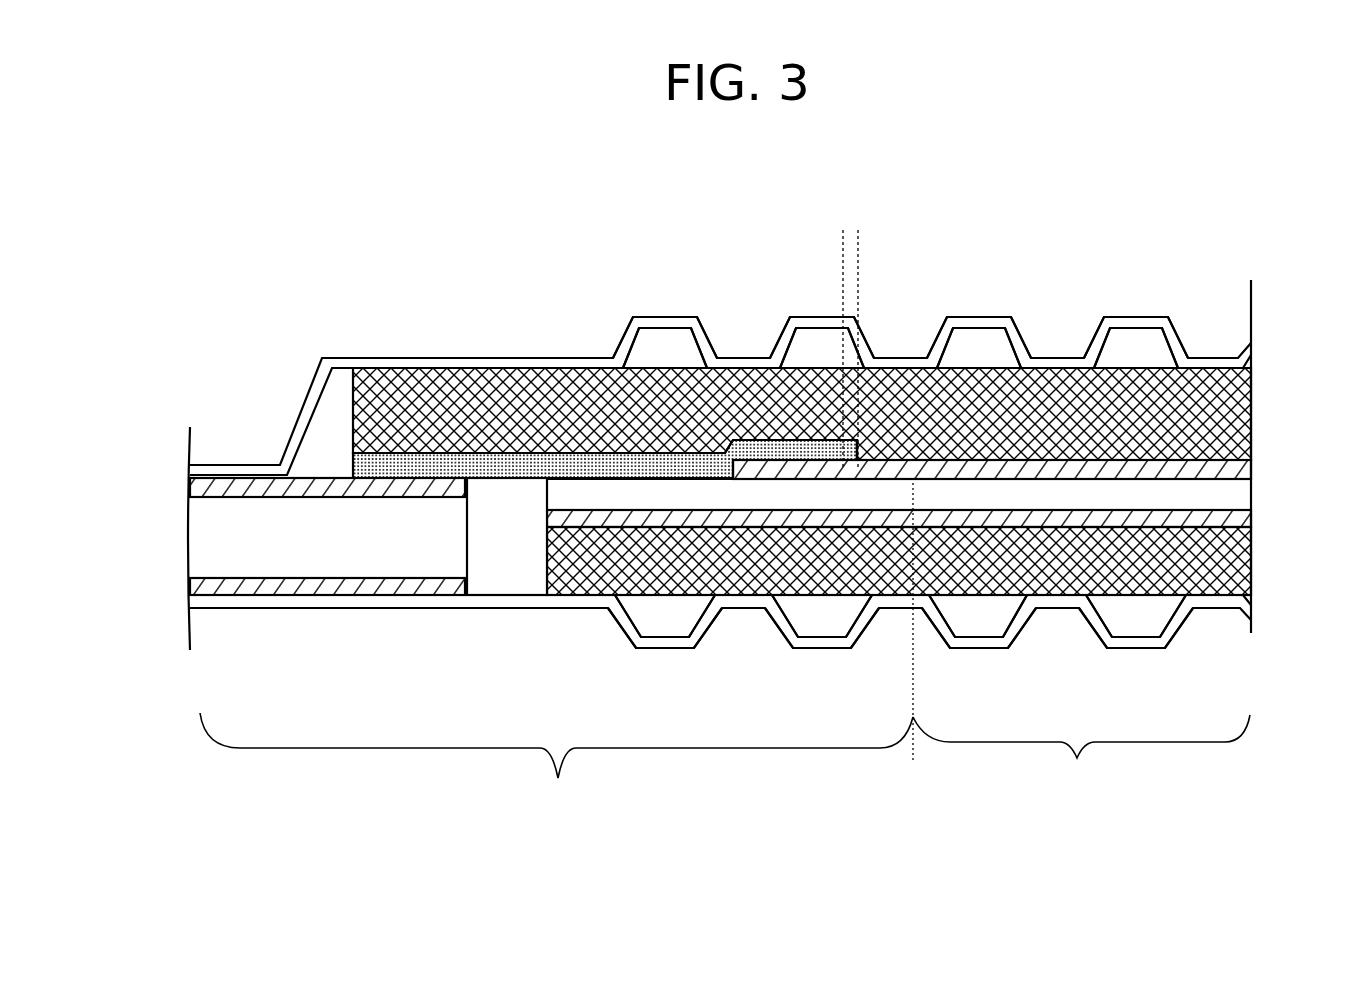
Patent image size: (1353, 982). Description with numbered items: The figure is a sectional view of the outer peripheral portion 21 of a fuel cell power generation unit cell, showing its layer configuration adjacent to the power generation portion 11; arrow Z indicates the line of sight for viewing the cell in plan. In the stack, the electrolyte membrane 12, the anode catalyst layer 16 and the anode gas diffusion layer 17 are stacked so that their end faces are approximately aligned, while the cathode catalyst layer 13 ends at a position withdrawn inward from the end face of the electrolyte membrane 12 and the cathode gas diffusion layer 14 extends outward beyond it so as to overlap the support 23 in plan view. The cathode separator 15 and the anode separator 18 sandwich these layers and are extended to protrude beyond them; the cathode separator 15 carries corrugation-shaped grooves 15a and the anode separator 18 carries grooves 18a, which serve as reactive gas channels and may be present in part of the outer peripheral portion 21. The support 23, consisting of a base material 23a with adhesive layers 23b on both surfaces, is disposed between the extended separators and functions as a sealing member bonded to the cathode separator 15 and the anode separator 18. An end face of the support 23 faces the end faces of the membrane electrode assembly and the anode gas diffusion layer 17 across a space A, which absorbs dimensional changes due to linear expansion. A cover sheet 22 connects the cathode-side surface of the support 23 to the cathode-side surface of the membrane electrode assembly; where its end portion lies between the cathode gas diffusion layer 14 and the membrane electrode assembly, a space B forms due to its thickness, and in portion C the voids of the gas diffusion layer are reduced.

The power generation portion 11 is at (1081, 635).
The electrolyte membrane 12 is at (1246, 496).
The cathode catalyst layer 13 is at (1250, 470).
The cathode gas diffusion layer 14 is at (1248, 425).
The cathode separator 15 is at (1183, 348).
The grooves 15a is at (667, 340).
The anode catalyst layer 16 is at (1250, 518).
The anode gas diffusion layer 17 is at (1250, 567).
The anode separator 18 is at (1173, 628).
The grooves 18a is at (668, 620).
The outer peripheral portion 21 is at (556, 763).
The cover sheet 22 is at (350, 463).
The support 23 is at (170, 547).
The base material 23a is at (372, 537).
The adhesive layers 23b is at (259, 498).
The space A is at (507, 548).
The space B is at (864, 452).
The portion C is at (852, 331).
The arrow Z is at (424, 292).